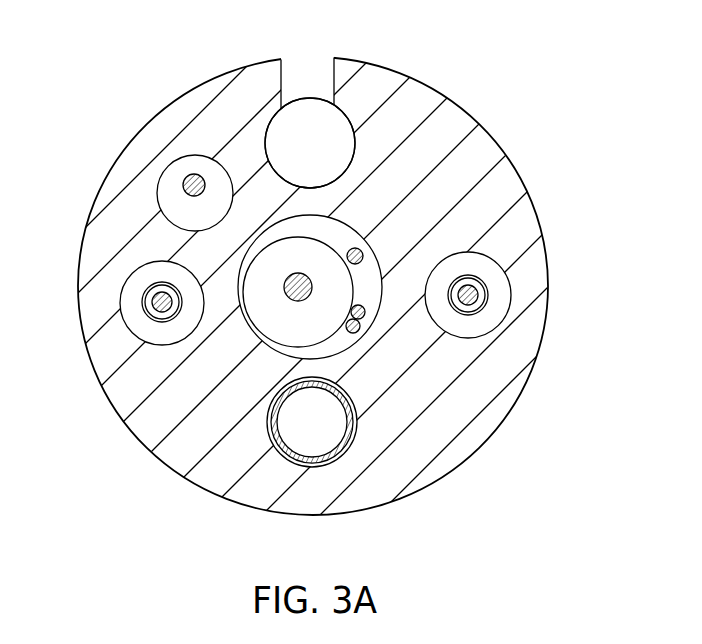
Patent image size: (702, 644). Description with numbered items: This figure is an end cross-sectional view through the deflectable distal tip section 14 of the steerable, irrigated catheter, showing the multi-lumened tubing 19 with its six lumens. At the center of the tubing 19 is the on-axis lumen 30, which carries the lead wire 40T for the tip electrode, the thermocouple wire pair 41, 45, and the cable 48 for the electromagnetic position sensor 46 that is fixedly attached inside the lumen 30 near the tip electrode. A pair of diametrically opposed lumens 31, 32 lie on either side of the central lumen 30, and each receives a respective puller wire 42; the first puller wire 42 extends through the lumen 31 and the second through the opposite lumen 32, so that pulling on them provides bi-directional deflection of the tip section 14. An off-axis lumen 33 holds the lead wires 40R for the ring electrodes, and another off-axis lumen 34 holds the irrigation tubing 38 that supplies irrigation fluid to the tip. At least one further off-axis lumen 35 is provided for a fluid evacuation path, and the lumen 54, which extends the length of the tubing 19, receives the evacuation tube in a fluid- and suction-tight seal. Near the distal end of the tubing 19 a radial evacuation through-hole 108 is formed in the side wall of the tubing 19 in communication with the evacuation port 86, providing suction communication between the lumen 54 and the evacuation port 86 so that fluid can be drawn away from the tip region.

The deflectable distal tip section 14 is at (67, 432).
The multi-lumened tubing 19 is at (450, 457).
The central on-axis lumen 30 is at (340, 221).
The lumen 31 is at (505, 318).
The lumen 32 is at (129, 277).
The off-axis lumen 33 is at (160, 207).
The off-axis lumen 34 is at (337, 460).
The off-axis lumen 35 is at (355, 143).
The irrigation tubing 38 is at (297, 464).
The lead wires 40R is at (183, 184).
The lead wire 40T is at (364, 256).
The thermocouple wire 41 is at (366, 315).
The puller wire 42 is at (152, 305).
The thermocouple wire 45 is at (353, 334).
The electromagnetic position sensor 46 is at (261, 251).
The cable 48 is at (292, 300).
The lumen 54 is at (328, 158).
The evacuation port 86 is at (323, 57).
The radial evacuation through-hole 108 is at (283, 66).